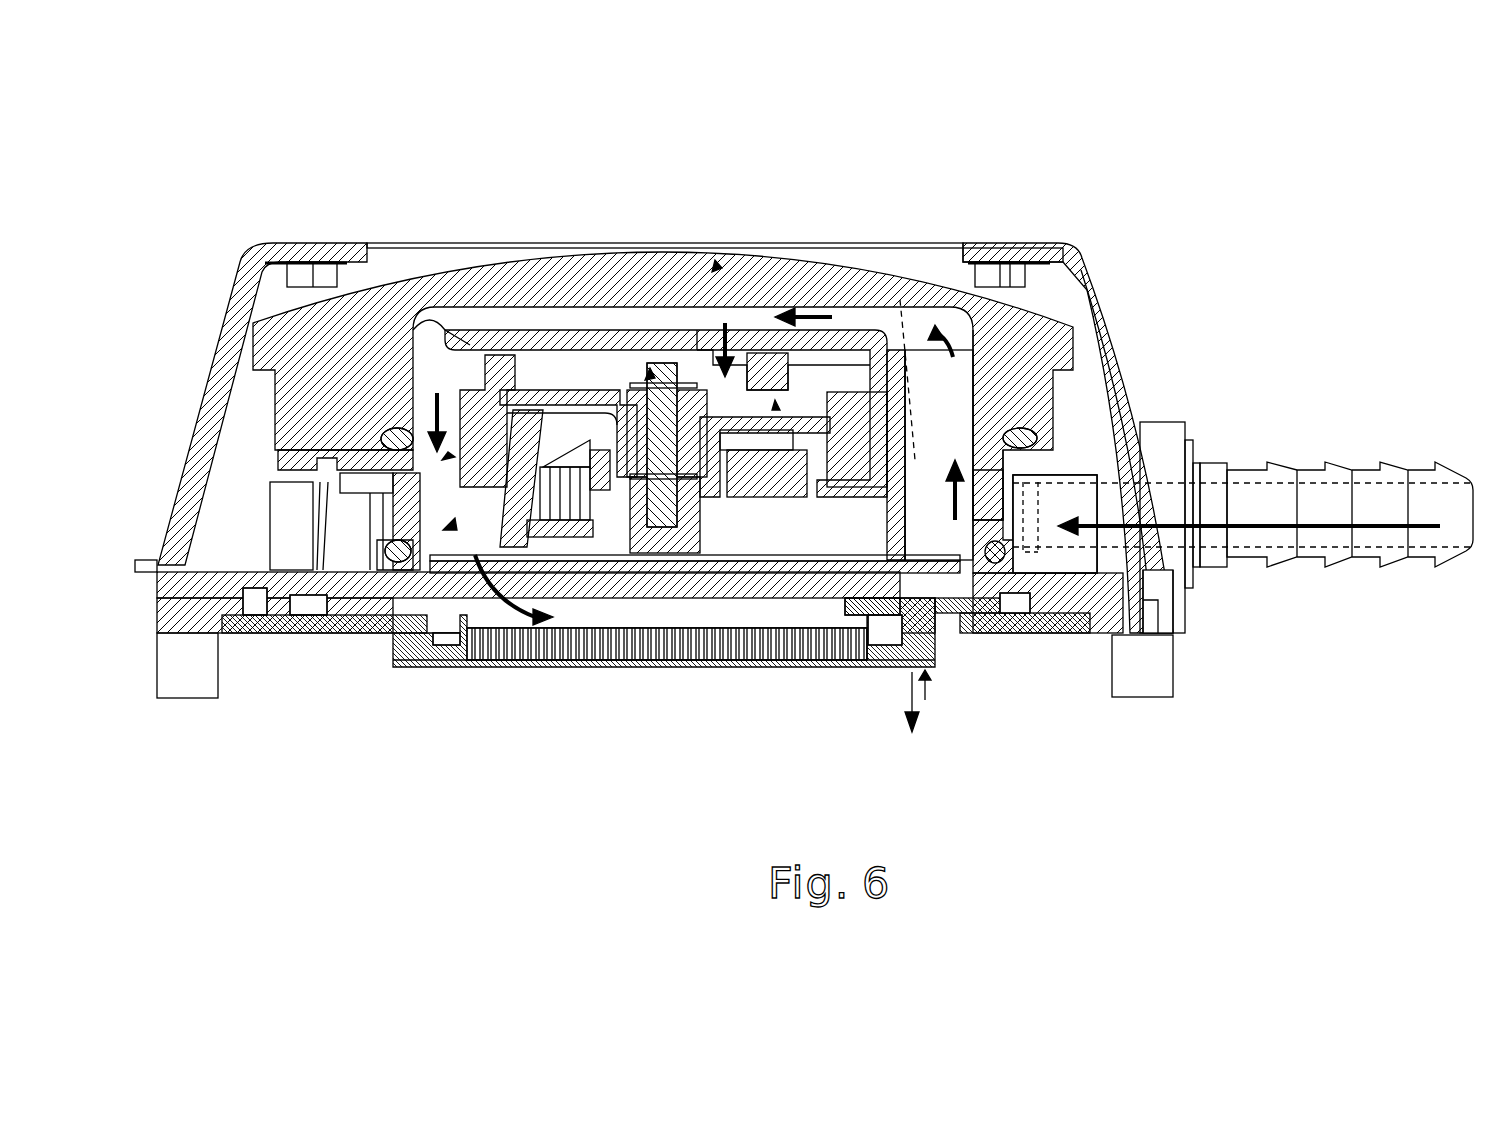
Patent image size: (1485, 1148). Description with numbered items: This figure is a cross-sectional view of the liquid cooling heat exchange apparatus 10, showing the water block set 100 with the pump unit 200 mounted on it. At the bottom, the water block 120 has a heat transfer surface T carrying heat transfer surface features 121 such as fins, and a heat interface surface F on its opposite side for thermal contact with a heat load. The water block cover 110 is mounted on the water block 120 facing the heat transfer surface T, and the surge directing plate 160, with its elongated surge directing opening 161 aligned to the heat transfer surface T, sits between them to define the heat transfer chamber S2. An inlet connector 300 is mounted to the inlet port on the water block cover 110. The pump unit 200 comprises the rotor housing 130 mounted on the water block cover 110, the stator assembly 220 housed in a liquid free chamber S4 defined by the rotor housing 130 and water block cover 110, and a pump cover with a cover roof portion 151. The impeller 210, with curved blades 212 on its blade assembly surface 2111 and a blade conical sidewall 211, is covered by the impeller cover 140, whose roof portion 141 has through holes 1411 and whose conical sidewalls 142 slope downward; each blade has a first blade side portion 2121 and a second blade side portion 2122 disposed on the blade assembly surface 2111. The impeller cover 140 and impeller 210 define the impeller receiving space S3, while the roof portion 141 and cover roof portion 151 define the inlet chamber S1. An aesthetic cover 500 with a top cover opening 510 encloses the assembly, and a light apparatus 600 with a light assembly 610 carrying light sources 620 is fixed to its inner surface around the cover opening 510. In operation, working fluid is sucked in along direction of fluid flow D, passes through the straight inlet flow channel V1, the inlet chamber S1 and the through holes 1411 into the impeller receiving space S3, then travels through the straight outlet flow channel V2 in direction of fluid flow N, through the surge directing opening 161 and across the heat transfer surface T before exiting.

The liquid cooling heat exchange apparatus 10 is at (150, 116).
The water block set 100 is at (553, 690).
The water block cover 110 is at (1100, 590).
The water block 120 is at (880, 668).
The heat transfer surface features 121 is at (733, 668).
The rotor housing 130 is at (455, 670).
The impeller cover 140 is at (545, 166).
The roof portion 141 is at (510, 330).
The conical sidewalls 142 is at (410, 340).
The through hole 1411 is at (660, 330).
The cover roof portion 151 is at (560, 270).
The surge directing plate 160 is at (1012, 636).
The surge directing opening 161 is at (685, 662).
The pump unit 200 is at (450, 455).
The impeller 210 is at (975, 395).
The blade conical sidewall 211 is at (880, 400).
The blade assembly surface 2111 is at (848, 380).
The curved blades 212 is at (835, 400).
The first blade side portion 2121 is at (760, 350).
The second blade side portion 2122 is at (930, 320).
The stator assembly 220 is at (905, 448).
The inlet connector 300 is at (1365, 470).
The aesthetic cover 500 is at (1030, 243).
The cover opening 510 is at (965, 245).
The light apparatus 600 is at (158, 292).
The light assembly 610 is at (265, 262).
The light sources 620 is at (300, 275).
The direction of fluid flow D is at (430, 410).
The inlet chamber S1 is at (640, 300).
The heat transfer chamber S2 is at (797, 665).
The impeller receiving space S3 is at (585, 370).
The liquid free chamber S4 is at (625, 625).
The straight inlet flow channel V1 is at (1005, 600).
The straight outlet flow channel V2 is at (445, 540).
The heat transfer surface T is at (420, 670).
The direction of fluid flow N is at (909, 717).
The heat interface surface F is at (928, 700).